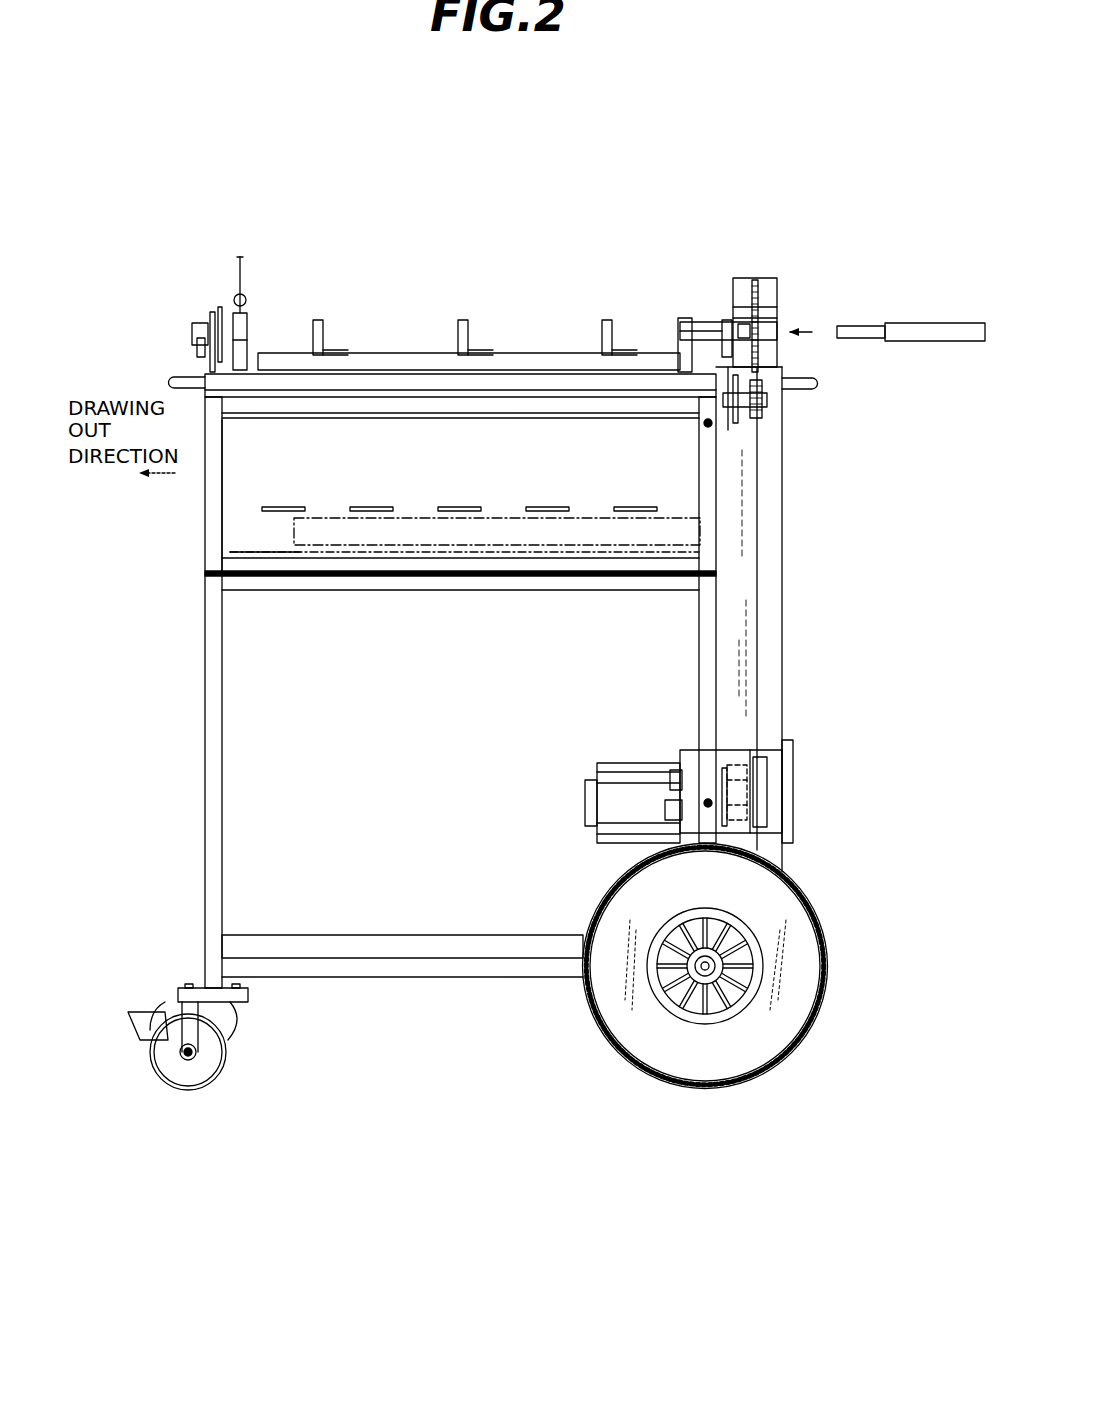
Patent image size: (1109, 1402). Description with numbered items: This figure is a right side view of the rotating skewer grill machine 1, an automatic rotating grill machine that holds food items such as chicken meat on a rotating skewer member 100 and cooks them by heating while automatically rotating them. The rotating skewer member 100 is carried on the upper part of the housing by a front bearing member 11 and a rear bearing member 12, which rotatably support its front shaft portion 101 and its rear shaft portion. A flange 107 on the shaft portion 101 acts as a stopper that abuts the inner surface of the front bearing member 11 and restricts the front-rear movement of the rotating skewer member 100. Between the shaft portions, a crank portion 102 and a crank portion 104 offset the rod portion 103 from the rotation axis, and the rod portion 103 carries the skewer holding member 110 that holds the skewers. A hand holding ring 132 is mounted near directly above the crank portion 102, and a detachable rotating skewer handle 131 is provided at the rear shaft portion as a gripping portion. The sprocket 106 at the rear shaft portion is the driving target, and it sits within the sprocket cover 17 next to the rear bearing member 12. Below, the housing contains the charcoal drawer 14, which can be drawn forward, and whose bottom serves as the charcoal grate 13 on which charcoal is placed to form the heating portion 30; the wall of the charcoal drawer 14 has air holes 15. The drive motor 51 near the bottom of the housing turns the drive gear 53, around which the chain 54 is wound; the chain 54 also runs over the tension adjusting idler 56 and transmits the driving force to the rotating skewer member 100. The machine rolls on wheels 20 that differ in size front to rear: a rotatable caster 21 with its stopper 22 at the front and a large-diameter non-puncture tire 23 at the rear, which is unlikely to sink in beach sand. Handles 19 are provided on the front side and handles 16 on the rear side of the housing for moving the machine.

The rotating skewer grill machine 1 is at (147, 192).
The front bearing member 11 is at (192, 365).
The rear bearing member 12 is at (720, 345).
The charcoal grate 13 is at (268, 548).
The charcoal drawer 14 is at (243, 493).
The air holes 15 is at (285, 506).
The handles 16 is at (820, 383).
The sprocket cover 17 is at (770, 290).
The handles 19 is at (175, 382).
The wheels 20 is at (577, 1162).
The rotatable caster 21 is at (190, 1062).
The stopper 22 is at (160, 1000).
The tire 23 is at (715, 1055).
The heating portion 30 is at (690, 527).
The drive motor 51 is at (636, 780).
The drive gear 53 is at (792, 752).
The chain 54 is at (760, 600).
The tension adjusting idler 56 is at (775, 410).
The rotating skewer member 100 is at (704, 270).
The shaft portion 101 is at (193, 305).
The crank portion 102 is at (259, 339).
The rod portion 103 is at (537, 362).
The crank portion 104 is at (657, 332).
The sprocket 106 is at (766, 300).
The flange 107 is at (221, 305).
The skewer holding member 110 is at (322, 318).
The rotating skewer handle 131 is at (940, 323).
The hand holding ring 132 is at (243, 256).